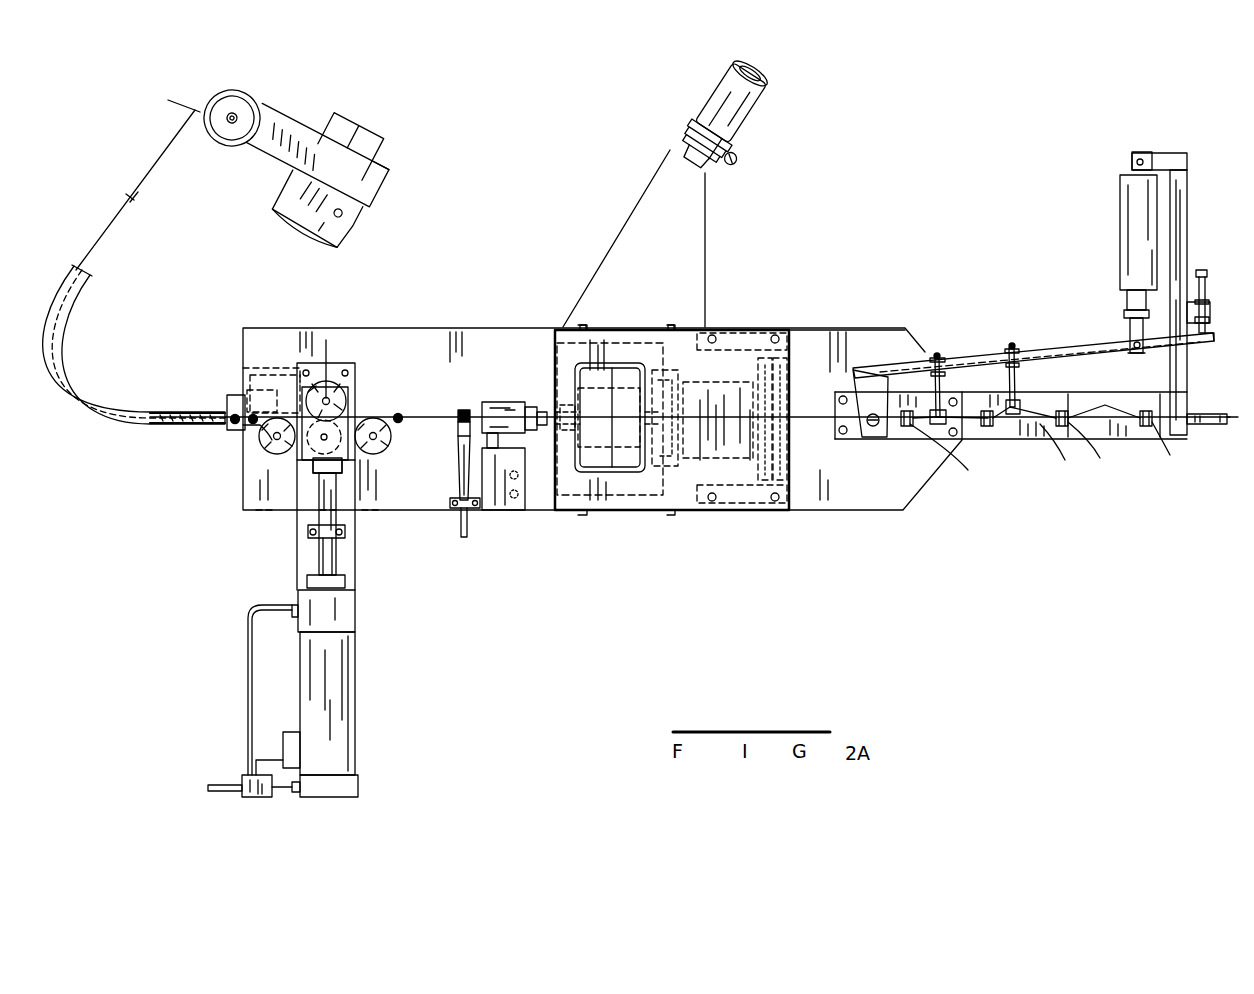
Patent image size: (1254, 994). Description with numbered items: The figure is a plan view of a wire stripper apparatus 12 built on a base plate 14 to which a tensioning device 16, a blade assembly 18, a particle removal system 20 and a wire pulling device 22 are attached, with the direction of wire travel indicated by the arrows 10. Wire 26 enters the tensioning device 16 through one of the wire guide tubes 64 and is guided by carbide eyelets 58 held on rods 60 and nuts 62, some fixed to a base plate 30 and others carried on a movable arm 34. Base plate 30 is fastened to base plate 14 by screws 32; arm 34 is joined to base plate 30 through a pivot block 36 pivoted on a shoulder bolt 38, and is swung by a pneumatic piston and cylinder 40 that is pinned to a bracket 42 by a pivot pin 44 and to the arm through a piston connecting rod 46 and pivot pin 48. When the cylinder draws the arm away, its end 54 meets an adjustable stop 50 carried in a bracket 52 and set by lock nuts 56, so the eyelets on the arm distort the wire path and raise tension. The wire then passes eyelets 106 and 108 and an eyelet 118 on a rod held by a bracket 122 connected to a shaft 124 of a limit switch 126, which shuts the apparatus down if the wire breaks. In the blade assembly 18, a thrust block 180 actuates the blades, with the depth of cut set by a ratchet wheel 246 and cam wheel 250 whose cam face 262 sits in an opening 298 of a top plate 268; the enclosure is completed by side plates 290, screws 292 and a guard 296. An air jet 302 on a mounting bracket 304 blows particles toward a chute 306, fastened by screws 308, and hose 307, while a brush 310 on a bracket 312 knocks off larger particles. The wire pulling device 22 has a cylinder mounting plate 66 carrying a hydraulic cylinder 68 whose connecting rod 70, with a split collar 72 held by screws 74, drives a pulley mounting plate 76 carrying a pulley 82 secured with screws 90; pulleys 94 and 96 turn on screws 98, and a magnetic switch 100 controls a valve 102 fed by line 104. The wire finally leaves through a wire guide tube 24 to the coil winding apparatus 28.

The strip feed direction 10 is at (327, 353).
The wire stripper apparatus 12 is at (775, 323).
The base plate 14 is at (872, 330).
The tensioning device 16 is at (1127, 445).
The blade assembly 18 is at (657, 530).
The particle removal system 20 is at (497, 530).
The wire pulling device 22 is at (240, 518).
The wire guide tube 24 is at (88, 400).
The wire 26 is at (106, 232).
The coil winding apparatus 28 is at (182, 95).
The base plate 30 is at (1058, 442).
The screws 32 is at (842, 396).
The movable arm 34 is at (988, 355).
The pivot block 36 is at (884, 440).
The shoulder bolt 38 is at (870, 428).
The pneumatic piston and cylinder 40 is at (1125, 190).
The bracket 42 is at (1188, 195).
The pivot pin 44 is at (1142, 152).
The piston connecting rod 46 is at (1128, 320).
The pivot pin 48 is at (1132, 343).
The adjustable stop 50 is at (1205, 268).
The bracket 52 is at (1210, 310).
The end of arm 54 is at (1212, 338).
The lock nuts 56 is at (1206, 300).
The carbide eyelets 58 is at (968, 452).
The rods 60 is at (937, 400).
The nuts 62 is at (937, 365).
The wire guide tubes 64 is at (1232, 402).
The cylinder mounting plate 66 is at (357, 555).
The hydraulic cylinder 68 is at (357, 683).
The connecting rod 70 is at (312, 566).
The split collar 72 is at (320, 538).
The screws 74 is at (310, 532).
The pulley mounting plate 76 is at (300, 460).
The pulley 82 is at (346, 398).
The screws 90 is at (340, 372).
The pulley 94 is at (270, 438).
The pulley 96 is at (380, 448).
The screws 98 is at (372, 433).
The magnetic switch 100 is at (283, 738).
The hydraulic control valve device 102 is at (262, 797).
The line 104 is at (222, 793).
The eyelet 106 is at (258, 428).
The eyelet 108 is at (400, 414).
The eyelet 118 is at (230, 412).
The bracket 122 is at (233, 394).
The shaft 124 is at (260, 392).
The limit switch 126 is at (270, 370).
The thrust block 180 is at (686, 368).
The ratchet wheel 246 is at (598, 378).
The cam wheel 250 is at (635, 473).
The cam face 262 is at (632, 385).
The top plate 268 is at (690, 500).
The side plates 290 is at (758, 350).
The screws 292 is at (713, 334).
The guard 296 is at (612, 512).
The opening 298 is at (648, 380).
The air jet 302 is at (492, 404).
The mounting bracket 304 is at (508, 512).
The chute 306 is at (655, 162).
The hose 307 is at (700, 92).
The screws 308 is at (582, 323).
The brush 310 is at (458, 486).
The bracket 312 is at (460, 510).